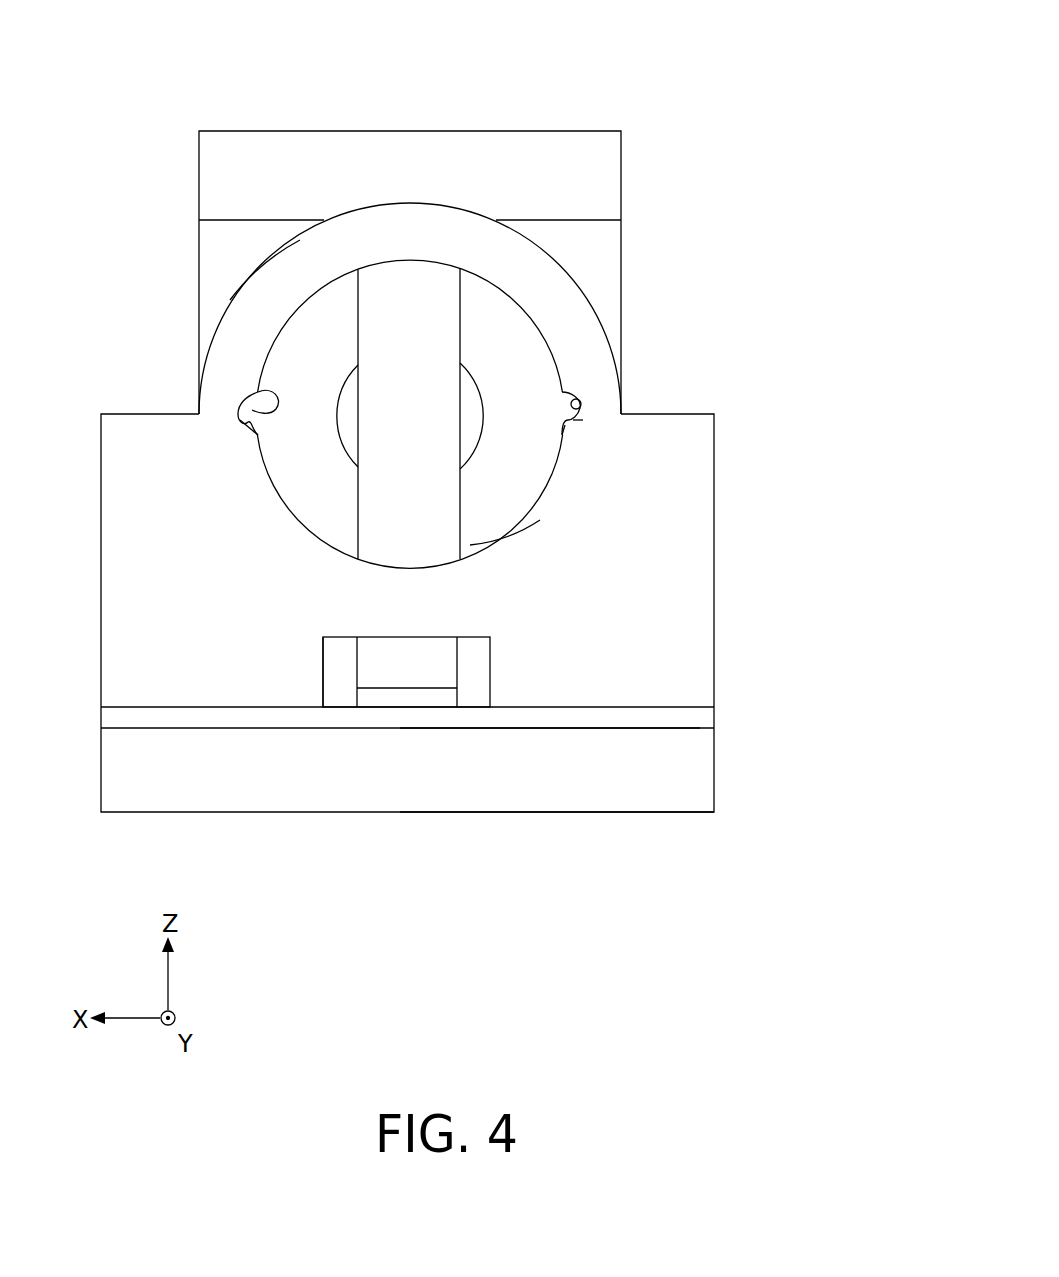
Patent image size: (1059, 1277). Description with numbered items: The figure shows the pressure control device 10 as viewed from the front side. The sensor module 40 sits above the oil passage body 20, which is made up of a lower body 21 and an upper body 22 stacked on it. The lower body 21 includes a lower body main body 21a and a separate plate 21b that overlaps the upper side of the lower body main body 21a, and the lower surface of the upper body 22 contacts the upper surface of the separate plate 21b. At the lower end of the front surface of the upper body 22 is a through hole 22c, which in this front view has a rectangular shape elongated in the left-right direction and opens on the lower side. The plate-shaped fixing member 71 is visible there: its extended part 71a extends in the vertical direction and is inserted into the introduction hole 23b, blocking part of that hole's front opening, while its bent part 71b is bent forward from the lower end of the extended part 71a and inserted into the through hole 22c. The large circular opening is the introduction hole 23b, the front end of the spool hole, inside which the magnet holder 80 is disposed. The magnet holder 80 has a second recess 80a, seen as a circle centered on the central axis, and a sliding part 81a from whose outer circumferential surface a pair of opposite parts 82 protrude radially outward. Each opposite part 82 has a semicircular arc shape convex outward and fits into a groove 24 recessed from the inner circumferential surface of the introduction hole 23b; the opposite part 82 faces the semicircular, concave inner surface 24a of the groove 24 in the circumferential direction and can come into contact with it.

The pressure control device 10 is at (684, 79).
The sensor module 40 is at (494, 126).
The oil passage body 20 is at (815, 663).
The lower body 21 is at (722, 765).
The lower body main body 21a is at (643, 783).
The separate plate 21b is at (573, 718).
The upper body 22 is at (687, 630).
The through hole 22c is at (327, 668).
The introduction hole 23b is at (515, 523).
The groove 24 is at (235, 443).
The inner surface of groove 24a is at (240, 414).
The fixing member 71 is at (467, 877).
The extended part 71a is at (420, 663).
The bent part 71b is at (405, 698).
The magnet holder 80 is at (530, 308).
The second recess 80a is at (481, 436).
The sliding part 81a is at (320, 320).
The opposite part 82 is at (258, 390).